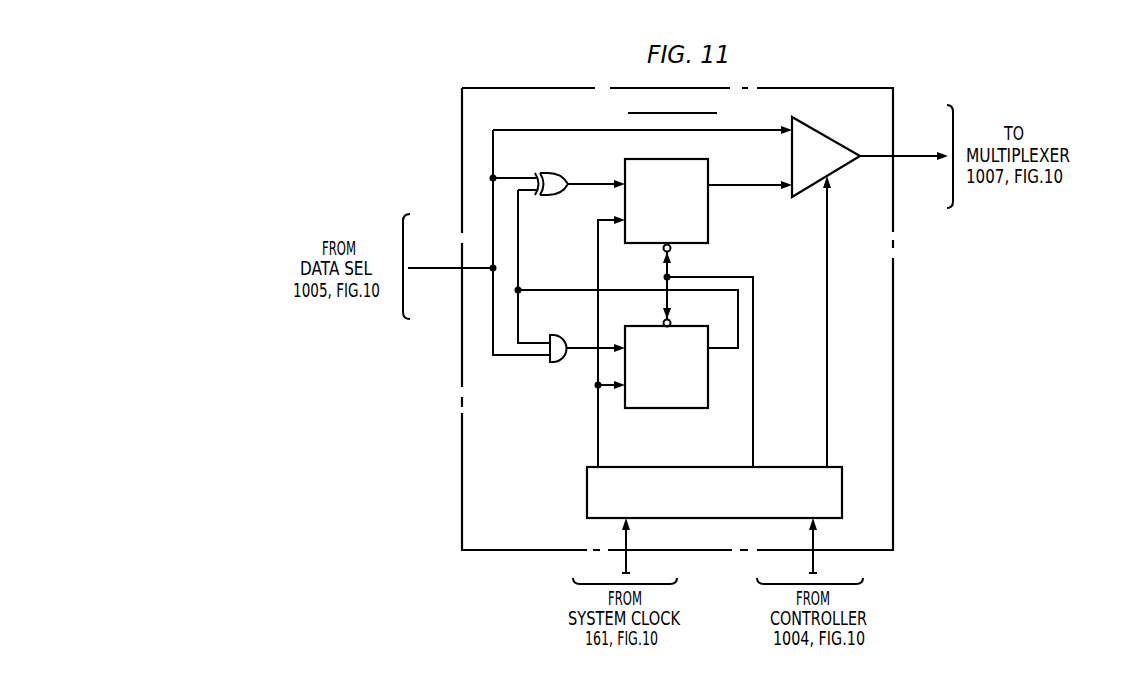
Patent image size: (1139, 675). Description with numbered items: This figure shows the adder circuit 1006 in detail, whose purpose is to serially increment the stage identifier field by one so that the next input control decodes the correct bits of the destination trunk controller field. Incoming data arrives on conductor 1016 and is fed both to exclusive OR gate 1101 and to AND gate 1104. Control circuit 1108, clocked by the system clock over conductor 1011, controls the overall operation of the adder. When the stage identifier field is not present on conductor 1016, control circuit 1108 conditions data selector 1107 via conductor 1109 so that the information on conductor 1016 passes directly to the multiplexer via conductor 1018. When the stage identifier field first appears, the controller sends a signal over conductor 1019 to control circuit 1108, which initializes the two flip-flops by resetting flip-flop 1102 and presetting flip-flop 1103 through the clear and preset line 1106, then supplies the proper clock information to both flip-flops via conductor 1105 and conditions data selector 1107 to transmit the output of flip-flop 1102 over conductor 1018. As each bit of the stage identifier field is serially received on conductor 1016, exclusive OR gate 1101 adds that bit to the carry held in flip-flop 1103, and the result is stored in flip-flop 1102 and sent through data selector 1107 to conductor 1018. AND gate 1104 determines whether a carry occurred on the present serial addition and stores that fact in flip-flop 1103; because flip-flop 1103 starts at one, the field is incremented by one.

The adder circuit 1006 is at (757, 88).
The conductor 1011 is at (630, 573).
The conductor 1016 is at (422, 266).
The conductor 1018 is at (912, 157).
The conductor 1019 is at (817, 573).
The exclusive OR gate 1101 is at (556, 171).
The flip-flop 1102 is at (645, 159).
The flip-flop 1103 is at (668, 409).
The AND gate 1104 is at (564, 364).
The conductor 1105 is at (598, 447).
The clear/preset line 1106 is at (753, 448).
The data selector 1107 is at (827, 118).
The control circuit 1108 is at (587, 496).
The conductor 1109 is at (827, 448).